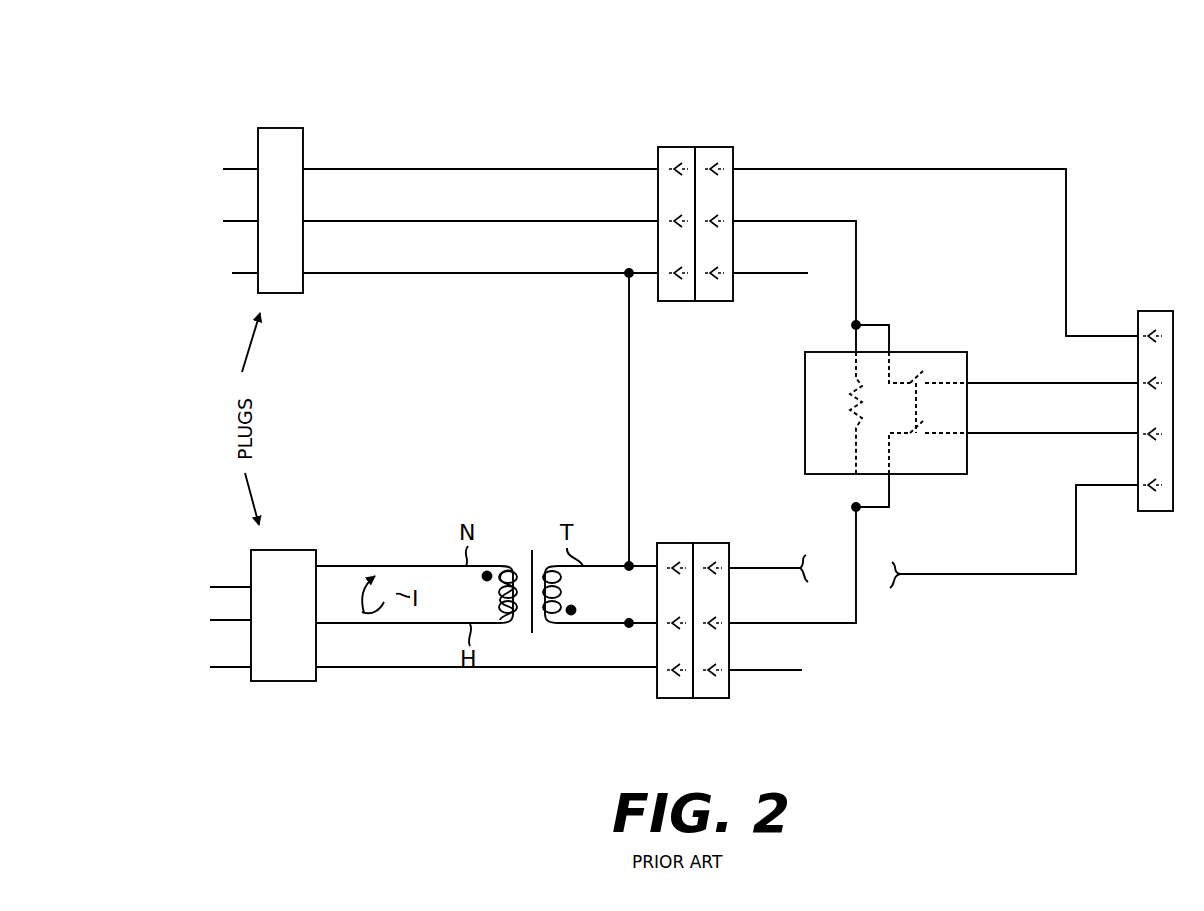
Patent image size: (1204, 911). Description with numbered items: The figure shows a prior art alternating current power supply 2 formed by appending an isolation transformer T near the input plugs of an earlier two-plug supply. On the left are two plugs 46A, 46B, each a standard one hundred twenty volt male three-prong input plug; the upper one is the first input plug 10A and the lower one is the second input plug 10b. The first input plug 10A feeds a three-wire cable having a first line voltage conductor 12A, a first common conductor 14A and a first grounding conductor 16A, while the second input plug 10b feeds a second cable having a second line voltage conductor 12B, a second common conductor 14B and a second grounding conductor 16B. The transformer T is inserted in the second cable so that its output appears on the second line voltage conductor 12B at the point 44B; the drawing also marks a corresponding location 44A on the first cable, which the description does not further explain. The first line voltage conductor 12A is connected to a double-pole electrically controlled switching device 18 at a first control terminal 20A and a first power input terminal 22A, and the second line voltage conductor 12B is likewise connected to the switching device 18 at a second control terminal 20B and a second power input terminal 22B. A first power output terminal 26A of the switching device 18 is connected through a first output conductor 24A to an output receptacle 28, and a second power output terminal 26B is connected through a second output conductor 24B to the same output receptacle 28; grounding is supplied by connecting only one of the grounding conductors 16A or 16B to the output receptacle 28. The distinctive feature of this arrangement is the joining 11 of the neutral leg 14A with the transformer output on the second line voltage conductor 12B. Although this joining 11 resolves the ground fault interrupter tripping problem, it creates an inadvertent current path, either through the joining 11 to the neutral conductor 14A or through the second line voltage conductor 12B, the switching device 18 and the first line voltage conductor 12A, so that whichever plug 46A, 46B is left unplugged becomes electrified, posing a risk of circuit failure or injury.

The alternating current power supply 2 is at (892, 61).
The first input plug 10A is at (720, 147).
The second input plug 10b is at (710, 698).
The joining 11 is at (631, 400).
The first line voltage conductor 12A is at (788, 221).
The second line voltage conductor 12B is at (790, 623).
The first common conductor 14A is at (795, 273).
The second common conductor 14B is at (986, 574).
The first grounding conductor 16A is at (820, 169).
The second grounding conductor 16B is at (775, 672).
The double-pole electrically controlled switching device 18 is at (805, 396).
The first control terminal 20A is at (854, 350).
The second control terminal 20B is at (854, 489).
The first power input terminal 22A is at (890, 342).
The second power input terminal 22B is at (892, 486).
The first output conductor 24A is at (1060, 383).
The second output conductor 24B is at (1065, 434).
The first power output terminal 26A is at (1003, 383).
The second power output terminal 26B is at (1000, 434).
The output receptacle 28 is at (1160, 311).
The first surge suppressor 44A is at (682, 147).
The transformer output connection point 44B is at (680, 543).
The first plug 46A is at (258, 142).
The second plug 46B is at (288, 550).